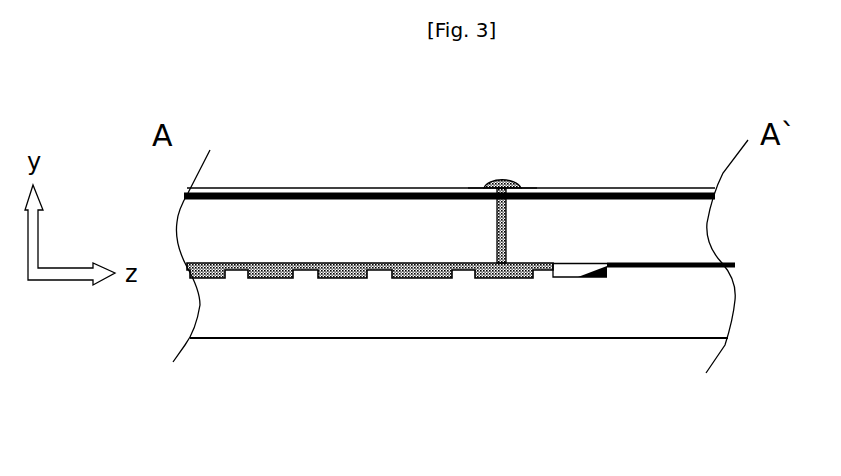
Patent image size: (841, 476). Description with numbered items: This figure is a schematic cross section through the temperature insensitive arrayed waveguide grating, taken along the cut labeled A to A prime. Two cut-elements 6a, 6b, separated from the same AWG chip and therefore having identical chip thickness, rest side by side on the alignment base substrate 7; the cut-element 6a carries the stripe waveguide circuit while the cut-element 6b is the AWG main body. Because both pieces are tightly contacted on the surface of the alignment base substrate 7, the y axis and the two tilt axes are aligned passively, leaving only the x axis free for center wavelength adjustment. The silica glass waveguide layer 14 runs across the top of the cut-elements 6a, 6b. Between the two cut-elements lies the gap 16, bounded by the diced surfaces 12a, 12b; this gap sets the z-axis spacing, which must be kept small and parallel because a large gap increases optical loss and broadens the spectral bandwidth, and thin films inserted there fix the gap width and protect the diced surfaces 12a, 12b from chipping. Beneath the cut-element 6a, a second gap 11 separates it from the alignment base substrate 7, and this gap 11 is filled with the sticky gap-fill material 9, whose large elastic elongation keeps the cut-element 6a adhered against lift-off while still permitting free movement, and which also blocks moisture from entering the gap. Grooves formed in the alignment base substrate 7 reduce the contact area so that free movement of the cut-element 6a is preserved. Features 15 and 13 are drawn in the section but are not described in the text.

The waveguide layer 14 is at (355, 190).
The gap-fill material 9 is at (501, 177).
The diced surface 12a is at (485, 181).
The diced surface 12b is at (515, 182).
The gap 16 is at (550, 230).
The cut-element 6a is at (335, 233).
The cut-element 6b is at (610, 226).
The gap 11 is at (340, 279).
The electrode pad 15 is at (412, 279).
The alignment base substrate 7 is at (547, 305).
The metal wiring layer 13 is at (637, 268).